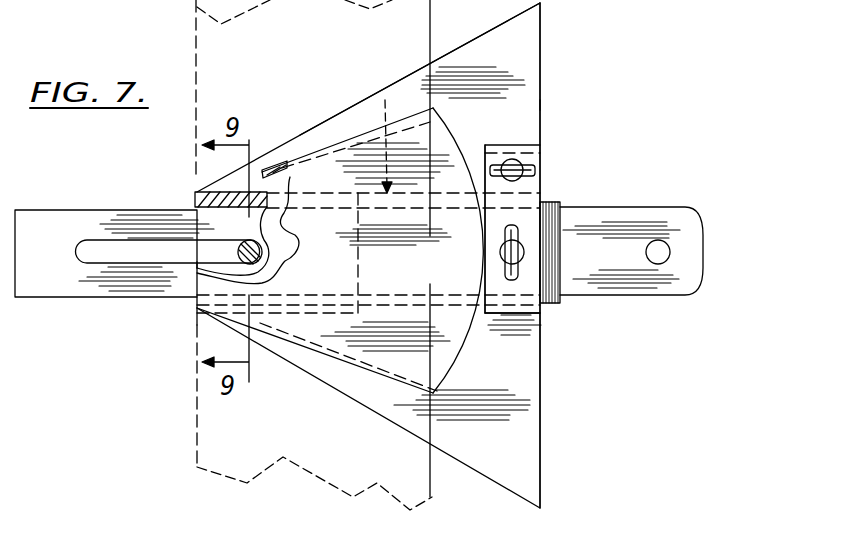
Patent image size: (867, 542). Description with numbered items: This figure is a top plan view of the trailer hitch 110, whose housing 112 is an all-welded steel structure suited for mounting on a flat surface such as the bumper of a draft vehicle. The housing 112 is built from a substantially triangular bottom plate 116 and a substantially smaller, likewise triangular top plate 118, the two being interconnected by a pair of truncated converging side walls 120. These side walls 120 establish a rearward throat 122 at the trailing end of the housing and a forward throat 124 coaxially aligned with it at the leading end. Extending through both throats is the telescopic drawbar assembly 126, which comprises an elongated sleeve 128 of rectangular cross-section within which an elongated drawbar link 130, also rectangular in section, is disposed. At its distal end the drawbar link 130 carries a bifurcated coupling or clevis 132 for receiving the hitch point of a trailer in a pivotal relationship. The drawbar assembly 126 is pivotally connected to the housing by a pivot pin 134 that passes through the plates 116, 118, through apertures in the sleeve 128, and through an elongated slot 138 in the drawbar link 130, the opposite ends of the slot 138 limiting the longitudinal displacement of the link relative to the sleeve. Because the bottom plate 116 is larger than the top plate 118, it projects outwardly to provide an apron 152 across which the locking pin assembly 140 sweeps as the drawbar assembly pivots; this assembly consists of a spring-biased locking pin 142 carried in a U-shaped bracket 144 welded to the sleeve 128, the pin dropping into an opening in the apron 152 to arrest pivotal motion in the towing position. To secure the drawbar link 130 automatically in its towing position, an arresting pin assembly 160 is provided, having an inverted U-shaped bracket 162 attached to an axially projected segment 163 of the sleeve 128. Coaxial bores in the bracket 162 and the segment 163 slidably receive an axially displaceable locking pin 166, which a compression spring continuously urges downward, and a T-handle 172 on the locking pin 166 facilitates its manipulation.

The trailer hitch 110 is at (553, 100).
The housing 112 is at (370, 372).
The bottom plate 116 is at (530, 388).
The top plate 118 is at (413, 286).
The side walls 120 is at (278, 158).
The rearward throat 122 is at (510, 438).
The forward throat 124 is at (262, 177).
The telescopic drawbar assembly 126 is at (385, 100).
The elongated sleeve 128 is at (277, 220).
The drawbar link 130 is at (153, 218).
The bifurcated coupling or clevis 132 is at (705, 258).
The pivot pin 134 is at (236, 242).
The slot 138 is at (137, 260).
The locking pin assembly 140 is at (520, 145).
The spring-biased locking pin 142 is at (522, 162).
The bracket 144 is at (498, 147).
The apron 152 is at (522, 55).
The arresting pin assembly 160 is at (543, 313).
The bracket 162 is at (497, 283).
The axially projected segment 163 is at (543, 240).
The locking pin 166 is at (500, 250).
The T-handle 172 is at (517, 270).